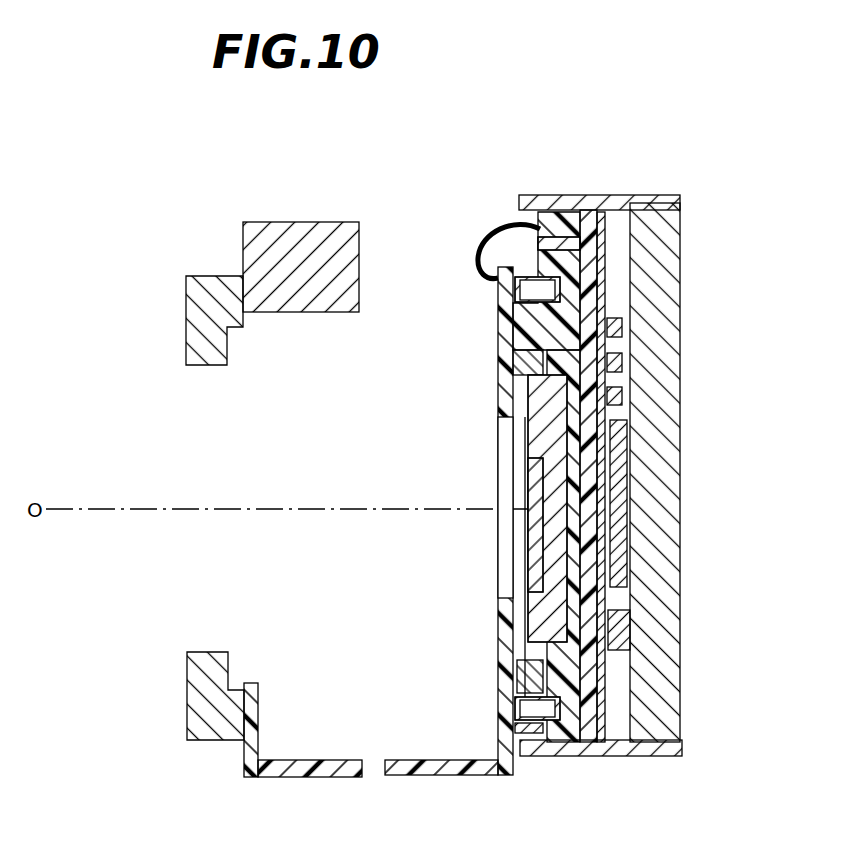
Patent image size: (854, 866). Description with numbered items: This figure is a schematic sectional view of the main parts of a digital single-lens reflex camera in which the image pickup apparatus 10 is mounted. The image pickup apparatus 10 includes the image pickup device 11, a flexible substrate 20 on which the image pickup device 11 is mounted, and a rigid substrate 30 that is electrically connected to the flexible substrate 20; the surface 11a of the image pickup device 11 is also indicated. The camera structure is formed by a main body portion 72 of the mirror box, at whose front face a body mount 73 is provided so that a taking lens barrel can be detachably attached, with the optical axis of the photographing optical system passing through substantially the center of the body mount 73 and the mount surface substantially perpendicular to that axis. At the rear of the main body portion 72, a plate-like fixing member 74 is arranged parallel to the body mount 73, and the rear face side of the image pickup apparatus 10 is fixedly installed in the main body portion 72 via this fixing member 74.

The image pickup apparatus 10 is at (465, 467).
The image pickup device 11 is at (535, 443).
The lens surface 11a is at (520, 490).
The flexible substrate 20 is at (508, 698).
The rigid substrate 30 is at (621, 216).
The main body portion 72 is at (308, 222).
The body mount 73 is at (205, 275).
The fixing member 74 is at (674, 371).